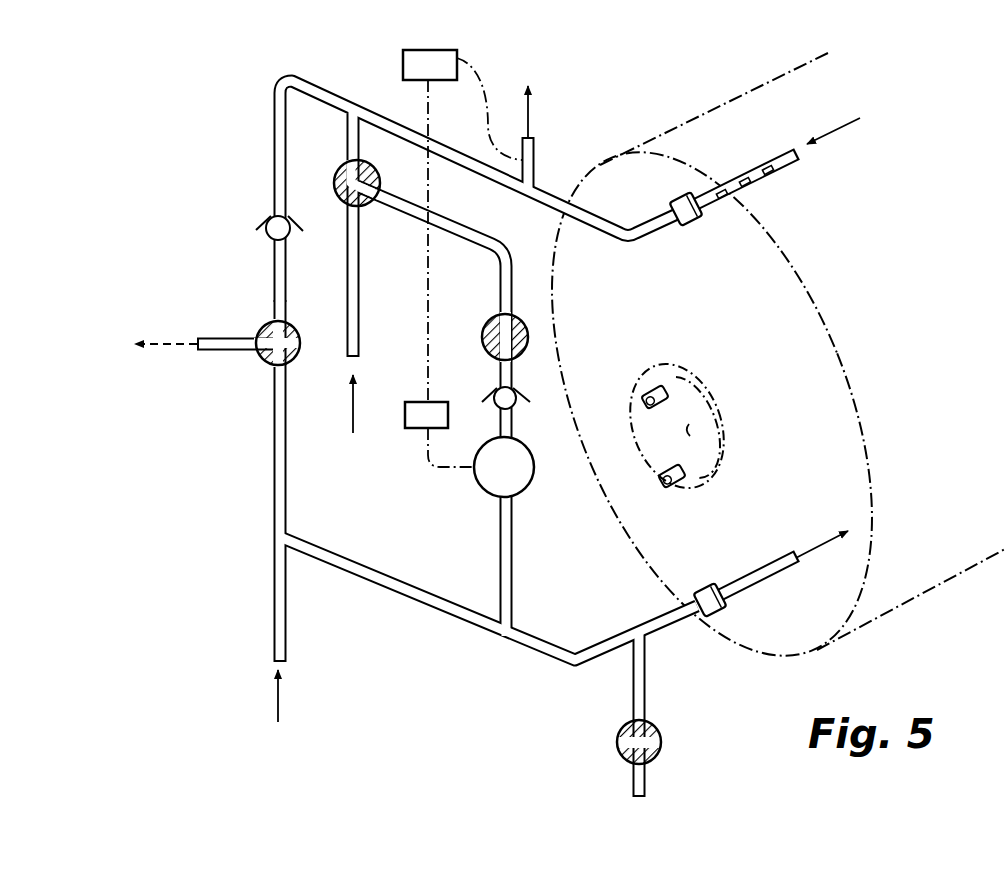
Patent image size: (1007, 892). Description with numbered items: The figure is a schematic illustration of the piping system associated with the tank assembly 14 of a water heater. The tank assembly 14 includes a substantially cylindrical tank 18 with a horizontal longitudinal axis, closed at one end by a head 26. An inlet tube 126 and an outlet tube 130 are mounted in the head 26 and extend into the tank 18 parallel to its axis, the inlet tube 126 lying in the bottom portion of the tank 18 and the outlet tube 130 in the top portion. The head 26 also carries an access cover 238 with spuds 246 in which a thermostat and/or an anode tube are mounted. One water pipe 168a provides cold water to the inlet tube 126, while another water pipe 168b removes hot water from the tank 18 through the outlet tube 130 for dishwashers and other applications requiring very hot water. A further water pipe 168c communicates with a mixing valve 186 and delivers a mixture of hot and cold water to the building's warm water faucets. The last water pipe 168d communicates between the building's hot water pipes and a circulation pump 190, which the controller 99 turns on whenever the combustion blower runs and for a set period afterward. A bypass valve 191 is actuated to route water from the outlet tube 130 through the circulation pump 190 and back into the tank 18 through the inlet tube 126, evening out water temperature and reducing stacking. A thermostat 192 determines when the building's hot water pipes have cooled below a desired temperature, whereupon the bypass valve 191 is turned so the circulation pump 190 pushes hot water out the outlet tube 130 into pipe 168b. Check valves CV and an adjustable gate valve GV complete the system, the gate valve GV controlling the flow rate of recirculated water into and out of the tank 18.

The tank assembly 14 is at (922, 352).
The tank 18 is at (724, 126).
The head 26 is at (823, 475).
The controller 99 is at (412, 422).
The inlet tube 126 is at (760, 568).
The outlet tube 130 is at (768, 175).
The water pipe 168a is at (272, 620).
The water pipe 168b is at (537, 148).
The water pipe 168c is at (221, 338).
The water pipe 168d is at (355, 340).
The mixing valve 186 is at (262, 365).
The circulation pump 190 is at (497, 487).
The bypass valve 191 is at (372, 208).
The thermostat 192 is at (437, 58).
The access cover 238 is at (723, 425).
The spuds 246 is at (636, 388).
The check valves CV is at (270, 238).
The gate valve GV is at (487, 322).